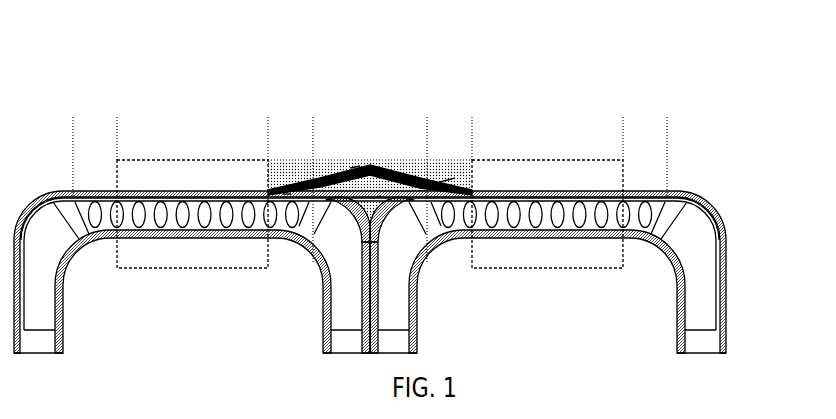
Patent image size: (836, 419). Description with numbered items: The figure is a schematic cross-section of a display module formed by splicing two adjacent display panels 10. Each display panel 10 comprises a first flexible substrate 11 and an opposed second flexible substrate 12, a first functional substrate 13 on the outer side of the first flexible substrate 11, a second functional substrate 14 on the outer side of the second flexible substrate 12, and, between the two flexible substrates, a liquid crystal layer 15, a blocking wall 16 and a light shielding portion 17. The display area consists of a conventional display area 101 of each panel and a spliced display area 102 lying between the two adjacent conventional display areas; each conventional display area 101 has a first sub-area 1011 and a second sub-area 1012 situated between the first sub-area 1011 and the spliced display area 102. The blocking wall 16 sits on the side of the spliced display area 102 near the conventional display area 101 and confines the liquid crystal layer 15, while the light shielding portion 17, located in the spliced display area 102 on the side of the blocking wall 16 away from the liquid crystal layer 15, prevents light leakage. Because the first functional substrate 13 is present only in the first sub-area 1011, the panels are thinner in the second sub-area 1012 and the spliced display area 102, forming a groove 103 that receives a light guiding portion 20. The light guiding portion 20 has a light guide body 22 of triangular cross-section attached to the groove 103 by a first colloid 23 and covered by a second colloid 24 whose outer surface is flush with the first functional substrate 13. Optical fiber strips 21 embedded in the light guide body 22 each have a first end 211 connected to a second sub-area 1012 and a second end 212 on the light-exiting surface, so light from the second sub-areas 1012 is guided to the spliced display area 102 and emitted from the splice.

The display panel 10 is at (422, 233).
The first flexible substrate 11 is at (676, 216).
The second flexible substrate 12 is at (676, 248).
The first functional substrate 13 is at (427, 187).
The second functional substrate 14 is at (680, 265).
The liquid crystal layer 15 is at (672, 192).
The blocking wall 16 is at (690, 207).
The light shielding portion 17 is at (707, 338).
The light guiding portion 20 is at (384, 102).
The optical fiber strip 21 is at (425, 133).
The light guide body 22 is at (383, 163).
The first colloid 23 is at (370, 163).
The second colloid 24 is at (350, 163).
The conventional display area 101 is at (365, 146).
The first sub-area 1011 is at (251, 135).
The second sub-area 1012 is at (300, 135).
The spliced display area 102 is at (333, 133).
The groove 103 is at (377, 197).
The first end 211 is at (287, 193).
The second end 212 is at (447, 180).